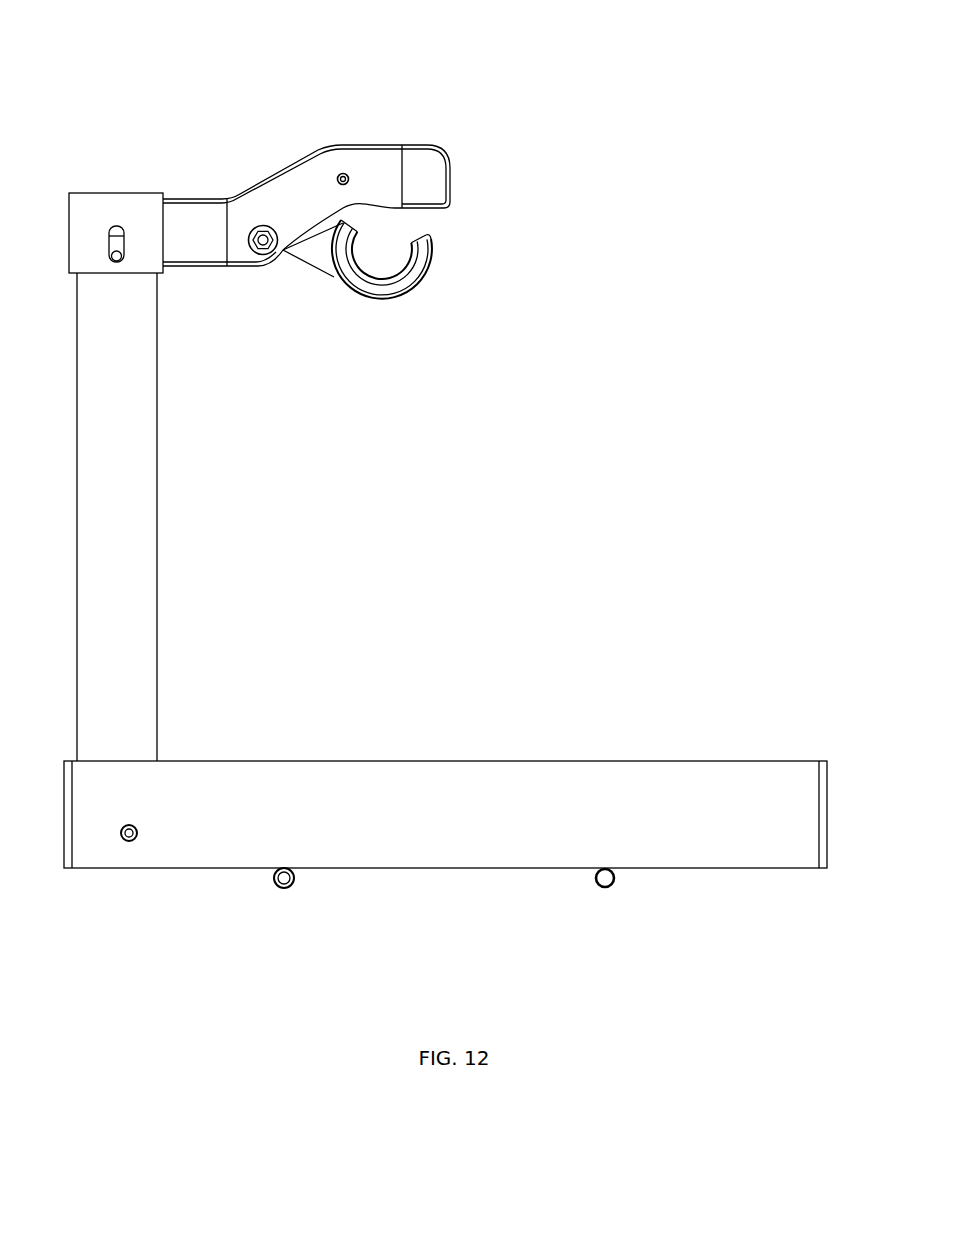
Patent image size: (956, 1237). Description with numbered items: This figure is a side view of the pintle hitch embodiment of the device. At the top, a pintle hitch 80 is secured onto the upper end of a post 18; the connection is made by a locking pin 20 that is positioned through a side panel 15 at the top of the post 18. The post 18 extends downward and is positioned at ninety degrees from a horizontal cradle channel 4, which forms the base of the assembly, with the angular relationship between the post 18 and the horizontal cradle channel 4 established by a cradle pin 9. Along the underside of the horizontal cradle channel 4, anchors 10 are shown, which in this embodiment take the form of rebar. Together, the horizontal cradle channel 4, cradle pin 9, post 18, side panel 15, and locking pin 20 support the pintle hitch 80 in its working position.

The horizontal cradle channel 4 is at (713, 852).
The cradle pin 9 is at (129, 841).
The anchors 10 is at (284, 888).
The side panel 15 is at (137, 201).
The post 18 is at (142, 511).
The locking pin 20 is at (119, 258).
The pintle hitch 80 is at (369, 165).